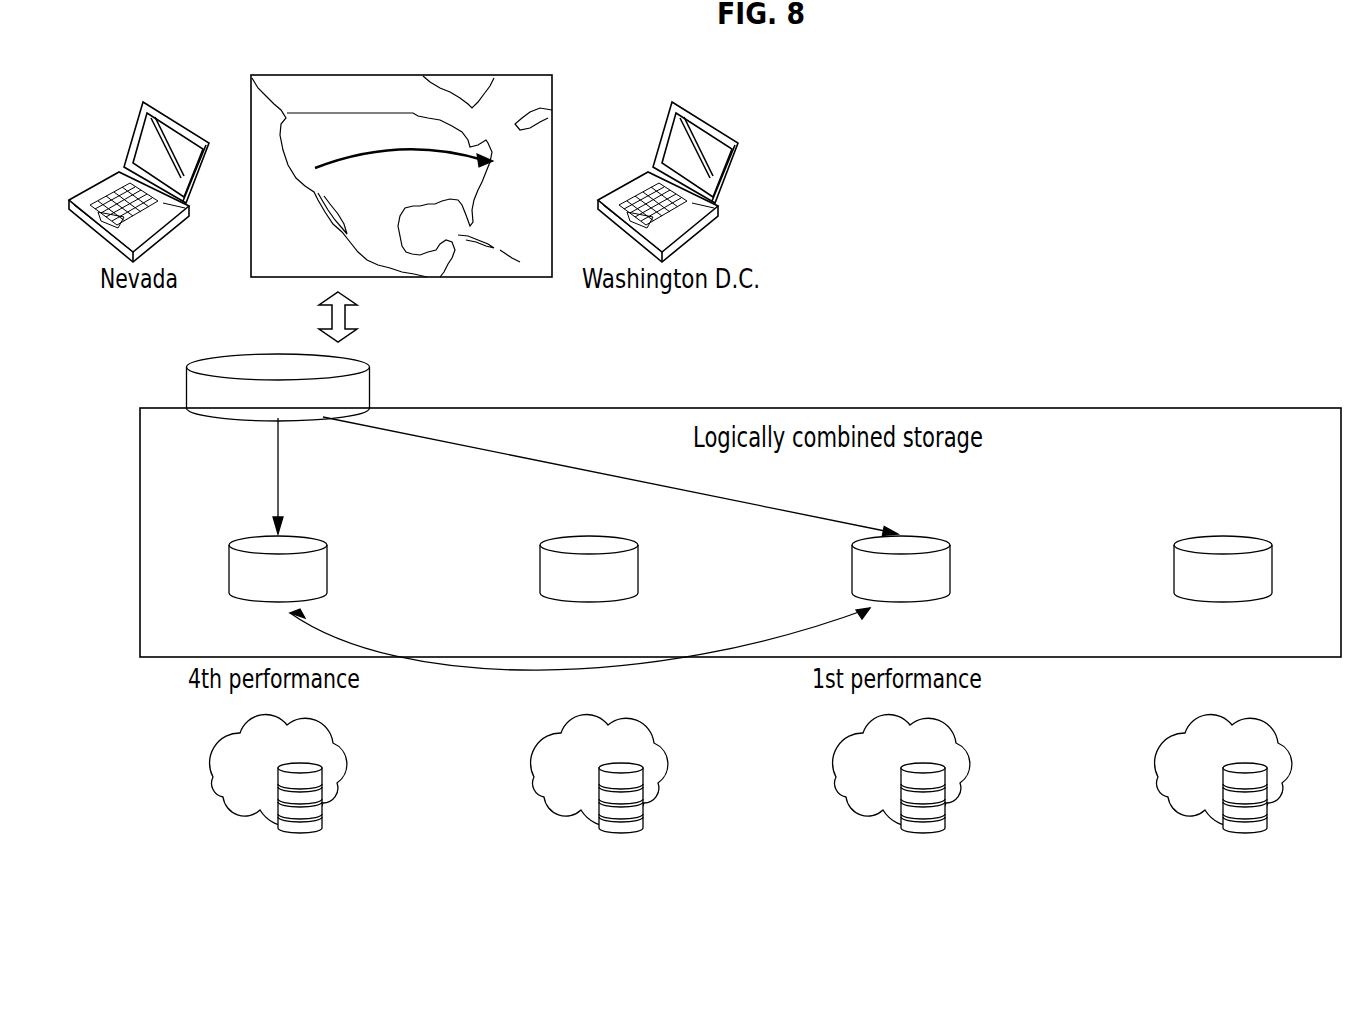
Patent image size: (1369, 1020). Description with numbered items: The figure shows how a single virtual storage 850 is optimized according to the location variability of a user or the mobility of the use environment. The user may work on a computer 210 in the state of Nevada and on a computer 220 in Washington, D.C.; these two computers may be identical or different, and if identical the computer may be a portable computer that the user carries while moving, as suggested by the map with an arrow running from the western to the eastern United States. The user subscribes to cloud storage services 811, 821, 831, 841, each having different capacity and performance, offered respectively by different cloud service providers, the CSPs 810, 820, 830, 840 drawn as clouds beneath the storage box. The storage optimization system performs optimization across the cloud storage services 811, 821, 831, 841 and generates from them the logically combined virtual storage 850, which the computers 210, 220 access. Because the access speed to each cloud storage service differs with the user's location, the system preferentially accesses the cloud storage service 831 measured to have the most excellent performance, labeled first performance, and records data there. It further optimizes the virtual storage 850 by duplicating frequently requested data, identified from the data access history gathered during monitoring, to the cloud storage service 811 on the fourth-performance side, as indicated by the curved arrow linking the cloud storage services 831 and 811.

The computer 210 is at (135, 129).
The computer 220 is at (664, 129).
The virtual storage 850 is at (364, 362).
The cloud storage service 811 is at (328, 592).
The cloud storage service 821 is at (615, 600).
The cloud storage service 831 is at (928, 600).
The cloud storage service 841 is at (1250, 600).
The CSP 810 is at (300, 830).
The CSP 820 is at (621, 830).
The CSP 830 is at (923, 830).
The CSP 840 is at (1245, 830).